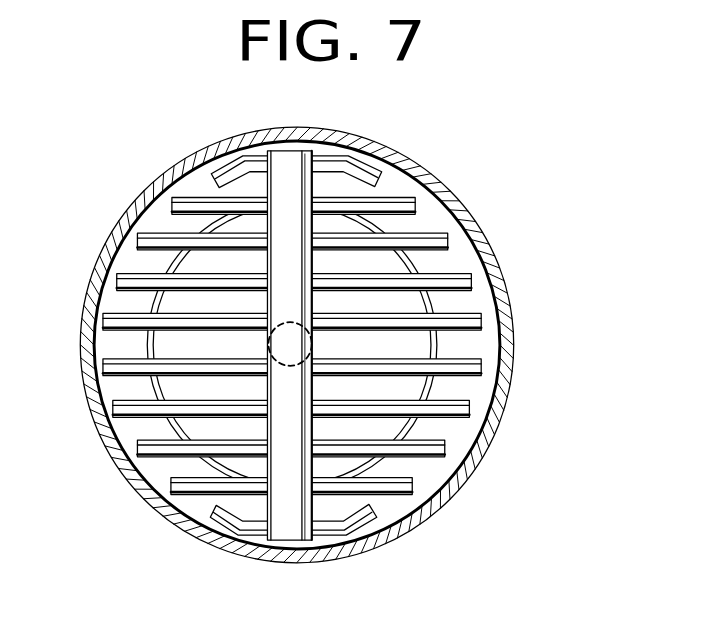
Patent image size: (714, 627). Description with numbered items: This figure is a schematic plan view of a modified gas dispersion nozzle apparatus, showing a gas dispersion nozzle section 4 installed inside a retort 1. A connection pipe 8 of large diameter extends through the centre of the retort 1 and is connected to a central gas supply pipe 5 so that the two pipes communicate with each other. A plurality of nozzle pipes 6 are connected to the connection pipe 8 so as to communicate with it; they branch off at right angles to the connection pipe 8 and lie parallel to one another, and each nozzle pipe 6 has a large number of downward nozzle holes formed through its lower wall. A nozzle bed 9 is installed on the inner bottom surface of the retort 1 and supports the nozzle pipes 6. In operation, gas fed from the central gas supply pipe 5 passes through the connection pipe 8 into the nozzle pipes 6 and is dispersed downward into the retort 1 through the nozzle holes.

The retort 1 is at (512, 351).
The gas dispersion nozzle section 4 is at (133, 421).
The central gas supply pipe 5 is at (282, 365).
The nozzle pipes 6 is at (408, 195).
The connection pipe 8 is at (333, 131).
The nozzle bed 9 is at (428, 265).